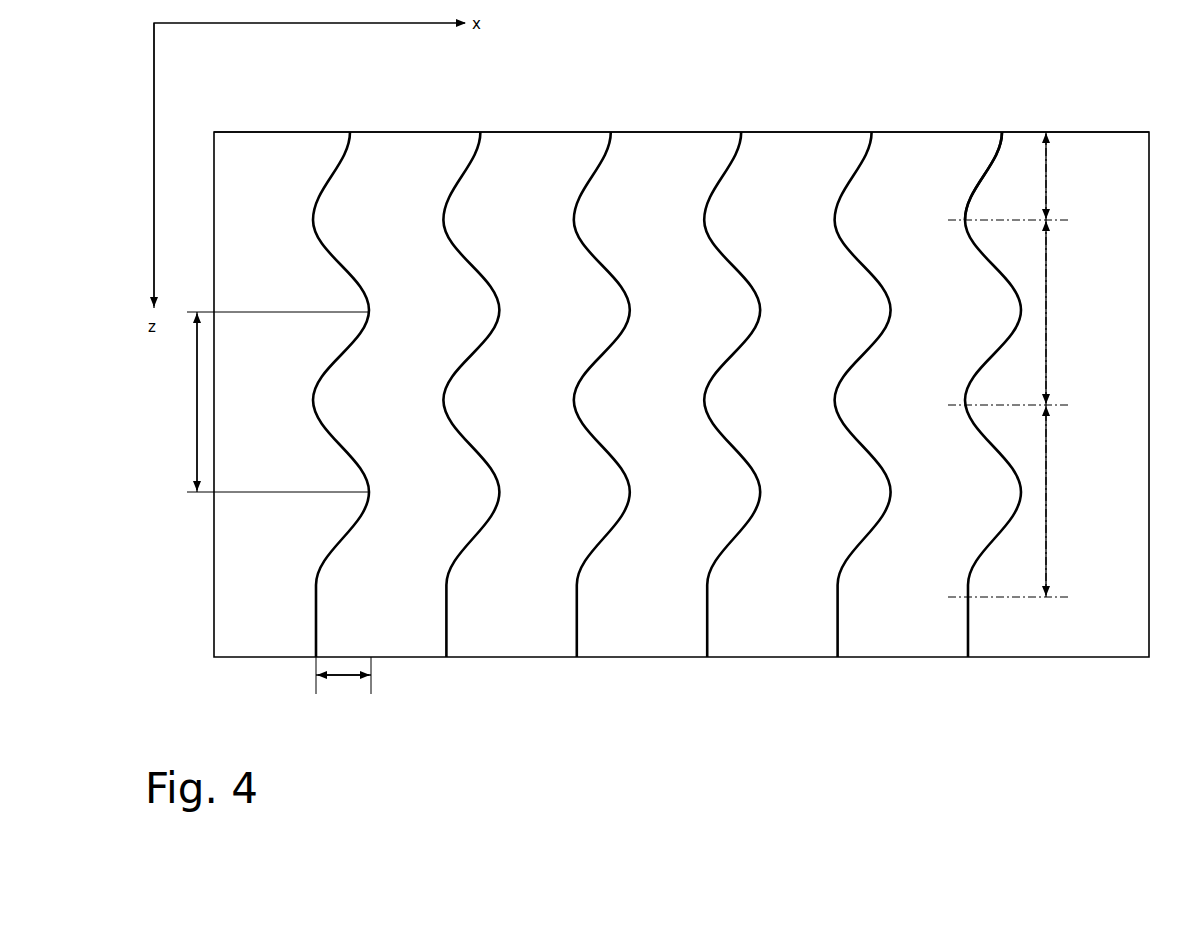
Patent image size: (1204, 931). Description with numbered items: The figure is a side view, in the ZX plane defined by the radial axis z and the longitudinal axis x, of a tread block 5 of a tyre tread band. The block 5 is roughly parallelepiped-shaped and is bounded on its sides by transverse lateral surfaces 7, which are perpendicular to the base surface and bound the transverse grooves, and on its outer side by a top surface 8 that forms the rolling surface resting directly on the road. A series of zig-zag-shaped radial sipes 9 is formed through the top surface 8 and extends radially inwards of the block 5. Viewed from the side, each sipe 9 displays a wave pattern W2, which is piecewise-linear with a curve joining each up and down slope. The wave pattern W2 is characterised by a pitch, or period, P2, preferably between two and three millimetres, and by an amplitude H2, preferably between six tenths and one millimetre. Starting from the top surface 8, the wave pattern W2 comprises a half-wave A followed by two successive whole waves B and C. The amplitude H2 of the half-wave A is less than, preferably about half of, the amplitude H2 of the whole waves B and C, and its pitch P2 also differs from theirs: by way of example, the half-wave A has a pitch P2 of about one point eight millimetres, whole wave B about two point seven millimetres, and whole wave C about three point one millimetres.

The block 5 is at (1117, 772).
The transverse lateral surface 7 is at (1152, 393).
The top surface 8 is at (668, 131).
The sipe 9 is at (709, 660).
The wave pattern W2 is at (974, 156).
The pitch P2 is at (269, 402).
The amplitude H2 is at (343, 677).
The half-wave A is at (1054, 176).
The whole wave B is at (1054, 312).
The whole wave C is at (1054, 501).